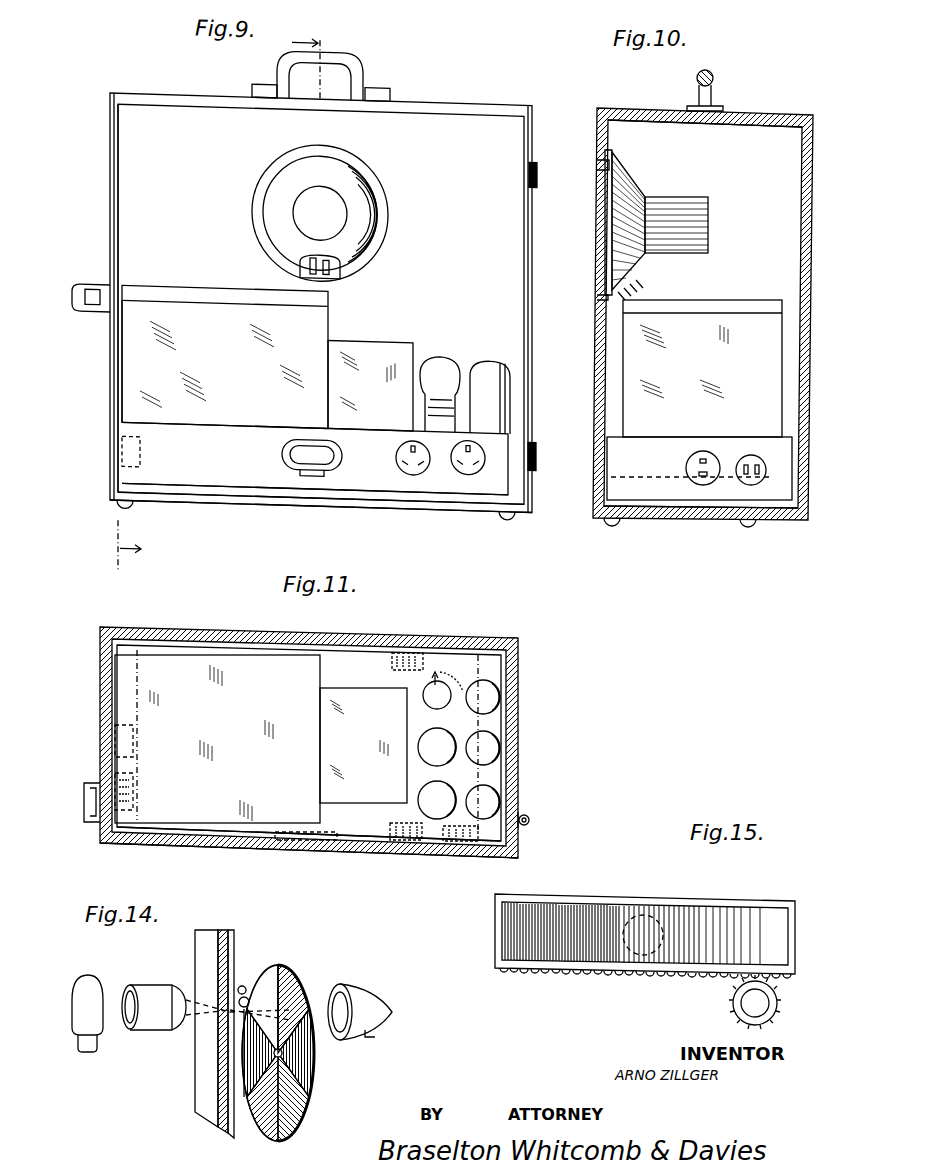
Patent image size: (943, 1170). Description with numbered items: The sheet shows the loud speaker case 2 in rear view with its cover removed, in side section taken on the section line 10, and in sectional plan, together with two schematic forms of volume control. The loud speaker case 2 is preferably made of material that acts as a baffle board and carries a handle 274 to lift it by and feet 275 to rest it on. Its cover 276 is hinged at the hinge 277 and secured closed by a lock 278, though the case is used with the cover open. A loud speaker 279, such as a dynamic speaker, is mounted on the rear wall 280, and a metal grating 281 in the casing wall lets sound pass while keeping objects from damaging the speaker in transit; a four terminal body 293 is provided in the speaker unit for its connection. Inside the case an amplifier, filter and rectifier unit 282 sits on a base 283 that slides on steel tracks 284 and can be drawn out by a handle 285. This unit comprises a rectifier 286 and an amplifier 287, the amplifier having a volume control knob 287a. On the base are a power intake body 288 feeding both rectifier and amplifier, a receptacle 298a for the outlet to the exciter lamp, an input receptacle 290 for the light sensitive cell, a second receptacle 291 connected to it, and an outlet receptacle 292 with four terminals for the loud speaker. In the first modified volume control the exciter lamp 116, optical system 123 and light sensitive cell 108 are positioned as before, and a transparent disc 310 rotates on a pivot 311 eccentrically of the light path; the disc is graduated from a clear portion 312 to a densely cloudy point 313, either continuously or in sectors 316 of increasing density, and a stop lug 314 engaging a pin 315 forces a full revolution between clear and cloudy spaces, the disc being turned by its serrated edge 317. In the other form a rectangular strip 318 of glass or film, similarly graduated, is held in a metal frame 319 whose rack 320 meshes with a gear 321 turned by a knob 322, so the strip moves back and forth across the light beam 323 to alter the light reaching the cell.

In FIG. 9, the loud speaker case 2 is at (486, 86).
In FIG. 10, the loud speaker case 2 is at (619, 104).
In FIG. 9, the section line 10— 10 is at (199, 301).
In FIG. 14, the light sensitive cell 108 is at (362, 1005).
In FIG. 14, the exciter lamp 116 is at (75, 995).
In FIG. 14, the optical system 123 is at (150, 993).
In FIG. 9, the handle 274 is at (322, 49).
In FIG. 10, the handle 274 is at (706, 70).
In FIG. 9, the feet 275 is at (507, 508).
In FIG. 10, the feet 275 is at (612, 526).
In FIG. 10, the cover 276 is at (805, 118).
In FIG. 11, the cover 276 is at (315, 850).
In FIG. 9, the hinge 277 is at (538, 160).
In FIG. 10, the hinge 277 is at (545, 176).
In FIG. 11, the hinge 277 is at (530, 820).
In FIG. 9, the lock 278 is at (106, 285).
In FIG. 11, the lock 278 is at (84, 800).
In FIG. 9, the loud speaker 279 is at (335, 200).
In FIG. 10, the loud speaker 279 is at (673, 205).
In FIG. 9, the rear wall 280 is at (130, 177).
In FIG. 10, the rear wall 280 is at (598, 306).
In FIG. 10, the metal grating 281 is at (608, 212).
In FIG. 9, the amplifier, filter and rectifier unit 282 is at (135, 331).
In FIG. 9, the base 283 is at (240, 467).
In FIG. 10, the base 283 is at (699, 468).
In FIG. 11, the base 283 is at (222, 830).
In FIG. 9, the steel tracks 284 is at (150, 497).
In FIG. 10, the steel tracks 284 is at (680, 508).
In FIG. 11, the steel tracks 284 is at (115, 698).
In FIG. 9, the handle 285 is at (300, 433).
In FIG. 11, the handle 285 is at (272, 845).
In FIG. 9, the rectifier 286 is at (195, 300).
In FIG. 10, the rectifier 286 is at (700, 320).
In FIG. 11, the rectifier 286 is at (234, 666).
In FIG. 9, the amplifier 287 is at (400, 342).
In FIG. 11, the amplifier 287 is at (350, 680).
In FIG. 11, the volume control knob 287a is at (425, 703).
In FIG. 9, the power intake body 288 is at (140, 452).
In FIG. 10, the power intake body 288 is at (748, 456).
In FIG. 11, the power intake body 288 is at (133, 778).
In FIG. 9, the input receptacle 290 is at (405, 463).
In FIG. 11, the input receptacle 290 is at (366, 850).
In FIG. 9, the second receptacle 291 is at (458, 461).
In FIG. 11, the second receptacle 291 is at (430, 858).
In FIG. 11, the outlet receptacle 292 is at (398, 672).
In FIG. 9, the four terminal body 293 is at (305, 257).
In FIG. 10, the four terminal body 293 is at (642, 268).
In FIG. 10, the receptacle 298a is at (700, 452).
In FIG. 11, the receptacle 298a is at (133, 726).
In FIG. 14, the disc 310 is at (290, 985).
In FIG. 14, the pivot 311 is at (283, 1058).
In FIG. 14, the clear portion 312 is at (250, 998).
In FIG. 14, the densely cloudy point 313 is at (243, 1070).
In FIG. 14, the stop lug 314 is at (222, 1013).
In FIG. 14, the pin 315 is at (244, 985).
In FIG. 14, the sectors 316 is at (314, 1005).
In FIG. 14, the serrated edge 317 is at (313, 1066).
In FIG. 15, the rectangular strip 318 is at (560, 912).
In FIG. 15, the metal frame 319 is at (496, 940).
In FIG. 15, the rack 320 is at (575, 976).
In FIG. 15, the gear 321 is at (768, 1023).
In FIG. 15, the knob 322 is at (765, 1006).
In FIG. 15, the light beam 323 is at (685, 903).